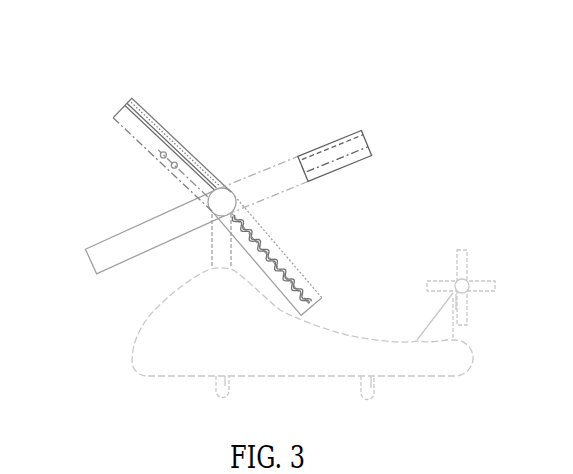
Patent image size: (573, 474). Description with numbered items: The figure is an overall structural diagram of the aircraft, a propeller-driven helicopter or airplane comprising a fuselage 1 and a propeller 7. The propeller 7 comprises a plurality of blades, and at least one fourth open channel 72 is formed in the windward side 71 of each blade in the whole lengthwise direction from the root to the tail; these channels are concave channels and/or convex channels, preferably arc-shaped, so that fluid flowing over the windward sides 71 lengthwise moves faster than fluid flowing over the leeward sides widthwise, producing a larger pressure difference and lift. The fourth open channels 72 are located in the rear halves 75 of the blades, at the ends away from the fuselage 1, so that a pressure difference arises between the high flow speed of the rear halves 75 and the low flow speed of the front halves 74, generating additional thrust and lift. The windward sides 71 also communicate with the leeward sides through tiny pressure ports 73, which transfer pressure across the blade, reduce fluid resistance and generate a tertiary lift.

The fuselage 1 is at (162, 385).
The propeller 7 is at (127, 210).
The windward side of blade 71 is at (123, 118).
The fourth open channel 72 is at (177, 143).
The pressure port 73 is at (158, 153).
The front half 74 is at (265, 180).
The rear half 75 is at (338, 147).